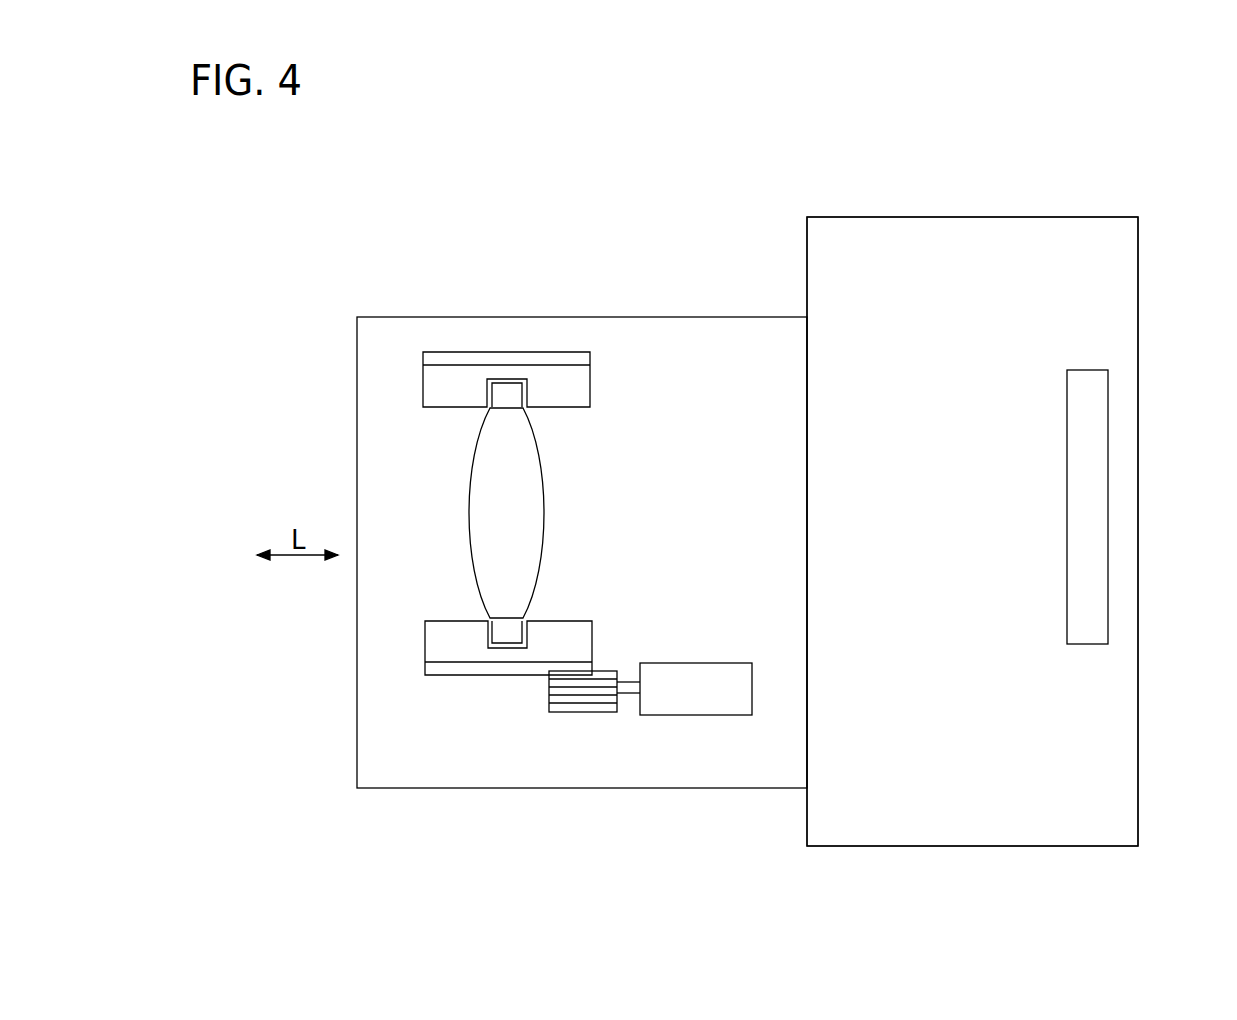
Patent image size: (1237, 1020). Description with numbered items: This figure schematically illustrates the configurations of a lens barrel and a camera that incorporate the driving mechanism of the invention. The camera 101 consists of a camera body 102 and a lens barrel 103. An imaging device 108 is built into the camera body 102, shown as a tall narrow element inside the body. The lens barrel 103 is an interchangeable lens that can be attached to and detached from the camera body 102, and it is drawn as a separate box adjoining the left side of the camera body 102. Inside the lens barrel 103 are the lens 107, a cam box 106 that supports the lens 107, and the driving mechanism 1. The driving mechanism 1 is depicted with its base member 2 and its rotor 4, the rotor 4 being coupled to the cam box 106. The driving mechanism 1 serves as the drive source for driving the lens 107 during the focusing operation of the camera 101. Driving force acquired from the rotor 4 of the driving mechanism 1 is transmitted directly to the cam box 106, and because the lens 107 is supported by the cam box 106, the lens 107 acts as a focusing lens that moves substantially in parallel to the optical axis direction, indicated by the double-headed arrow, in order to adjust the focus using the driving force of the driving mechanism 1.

The driving mechanism 1 is at (715, 641).
The base member 2 is at (694, 700).
The rotor 4 is at (593, 700).
The camera 101 is at (1179, 233).
The camera body 102 is at (1011, 828).
The lens barrel 103 is at (694, 326).
The cam box 106 is at (450, 663).
The lens 107 is at (535, 507).
The imaging device 108 is at (1073, 500).